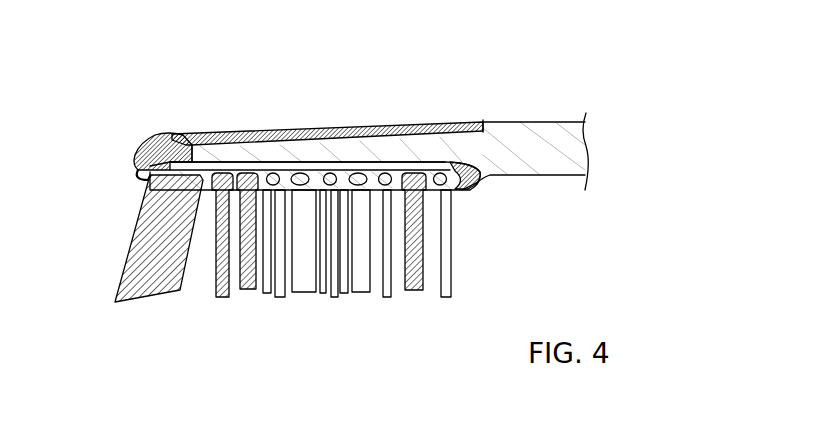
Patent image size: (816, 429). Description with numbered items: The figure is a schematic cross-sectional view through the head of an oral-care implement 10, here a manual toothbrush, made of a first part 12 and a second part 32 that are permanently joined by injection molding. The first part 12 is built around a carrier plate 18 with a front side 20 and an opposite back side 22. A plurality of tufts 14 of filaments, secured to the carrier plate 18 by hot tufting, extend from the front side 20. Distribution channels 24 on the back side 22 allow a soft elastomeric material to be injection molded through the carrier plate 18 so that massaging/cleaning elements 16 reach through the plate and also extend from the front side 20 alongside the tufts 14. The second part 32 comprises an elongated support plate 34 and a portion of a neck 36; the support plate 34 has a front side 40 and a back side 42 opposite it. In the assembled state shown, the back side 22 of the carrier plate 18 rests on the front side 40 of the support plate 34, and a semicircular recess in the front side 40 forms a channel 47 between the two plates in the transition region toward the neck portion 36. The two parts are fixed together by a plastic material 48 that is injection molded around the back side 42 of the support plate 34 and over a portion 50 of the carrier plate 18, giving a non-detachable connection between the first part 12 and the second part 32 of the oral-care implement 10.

The oral-care implement 10 is at (531, 110).
The first part 12 is at (233, 310).
The tufts 14 is at (386, 298).
The massaging/cleaning elements 16 is at (342, 298).
The carrier plate 18 is at (457, 185).
The front side 20 is at (207, 192).
The back side 22 is at (214, 160).
The distribution channels 24 is at (340, 162).
The second part 32 is at (397, 116).
The support plate 34 is at (467, 140).
The neck portion 36 is at (550, 143).
The front side 40 is at (397, 133).
The back side 42 is at (285, 152).
The channel 47 is at (483, 176).
The plastic material 48 is at (140, 146).
The portion of the carrier plate 50 is at (126, 178).